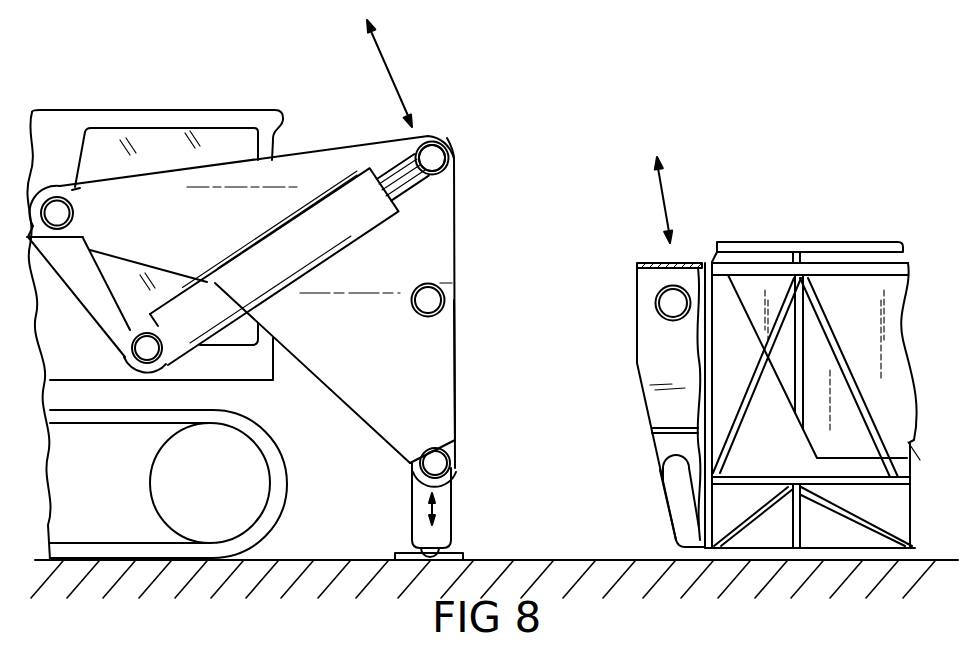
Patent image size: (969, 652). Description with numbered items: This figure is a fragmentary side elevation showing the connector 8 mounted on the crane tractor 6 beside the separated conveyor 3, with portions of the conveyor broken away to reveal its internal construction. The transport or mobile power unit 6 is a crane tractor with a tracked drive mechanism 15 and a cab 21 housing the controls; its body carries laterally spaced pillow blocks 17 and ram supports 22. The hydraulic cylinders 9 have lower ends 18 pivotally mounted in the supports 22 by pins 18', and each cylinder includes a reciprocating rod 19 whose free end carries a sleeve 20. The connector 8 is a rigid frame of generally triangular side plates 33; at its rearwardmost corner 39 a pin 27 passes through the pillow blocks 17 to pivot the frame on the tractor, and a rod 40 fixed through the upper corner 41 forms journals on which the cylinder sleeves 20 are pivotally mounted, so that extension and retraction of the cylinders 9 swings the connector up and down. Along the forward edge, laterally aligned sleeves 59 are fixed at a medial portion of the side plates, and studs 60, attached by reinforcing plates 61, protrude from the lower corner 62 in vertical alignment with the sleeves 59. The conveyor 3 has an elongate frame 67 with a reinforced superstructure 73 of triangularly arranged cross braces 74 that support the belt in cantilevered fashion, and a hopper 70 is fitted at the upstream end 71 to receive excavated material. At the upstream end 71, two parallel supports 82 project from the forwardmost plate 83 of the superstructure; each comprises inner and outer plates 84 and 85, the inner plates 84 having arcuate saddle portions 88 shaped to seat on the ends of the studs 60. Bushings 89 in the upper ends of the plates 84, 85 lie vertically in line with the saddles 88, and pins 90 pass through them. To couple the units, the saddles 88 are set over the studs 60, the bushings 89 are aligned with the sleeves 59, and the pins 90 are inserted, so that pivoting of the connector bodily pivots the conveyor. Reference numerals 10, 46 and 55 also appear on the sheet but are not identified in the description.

The conveyor assembly 3 is at (879, 231).
The crane tractor 6 is at (150, 103).
The connector 8 is at (462, 141).
The hydraulic cylinder 9 is at (267, 252).
The support leg 10 is at (403, 502).
The tracked drive mechanism 15 is at (268, 437).
The pillow blocks 17 is at (73, 230).
The lower ends of hydraulic cylinders 18 is at (122, 371).
The pins 18' is at (178, 325).
The reciprocating rod 19 is at (405, 188).
The hydraulic cylinder sleeves 20 is at (434, 140).
The cab 21 is at (108, 140).
The ram supports 22 is at (167, 372).
The pin 27 is at (62, 213).
The side plates 33 is at (443, 393).
The rearwardmost corner 39 is at (73, 193).
The rod 40 is at (440, 168).
The upper corner 41 is at (385, 153).
The extensible leg 46 is at (452, 508).
The foot pad 55 is at (465, 552).
The sleeves 59 is at (443, 292).
The studs 60 is at (440, 463).
The reinforcing plates 61 is at (447, 448).
The lower corner 62 is at (443, 420).
The elongate frame 67 is at (740, 478).
The hopper 70 is at (833, 242).
The upstream end 71 is at (780, 263).
The reinforced superstructure 73 is at (711, 248).
The cross braces 74 is at (853, 523).
The supports 82 is at (647, 262).
The forwardmost plate 83 is at (712, 327).
The inner plates 84 is at (653, 372).
The outer plates 85 is at (678, 522).
The saddle portions 88 is at (677, 465).
The bushings 89 is at (655, 303).
The pins 90 is at (668, 308).